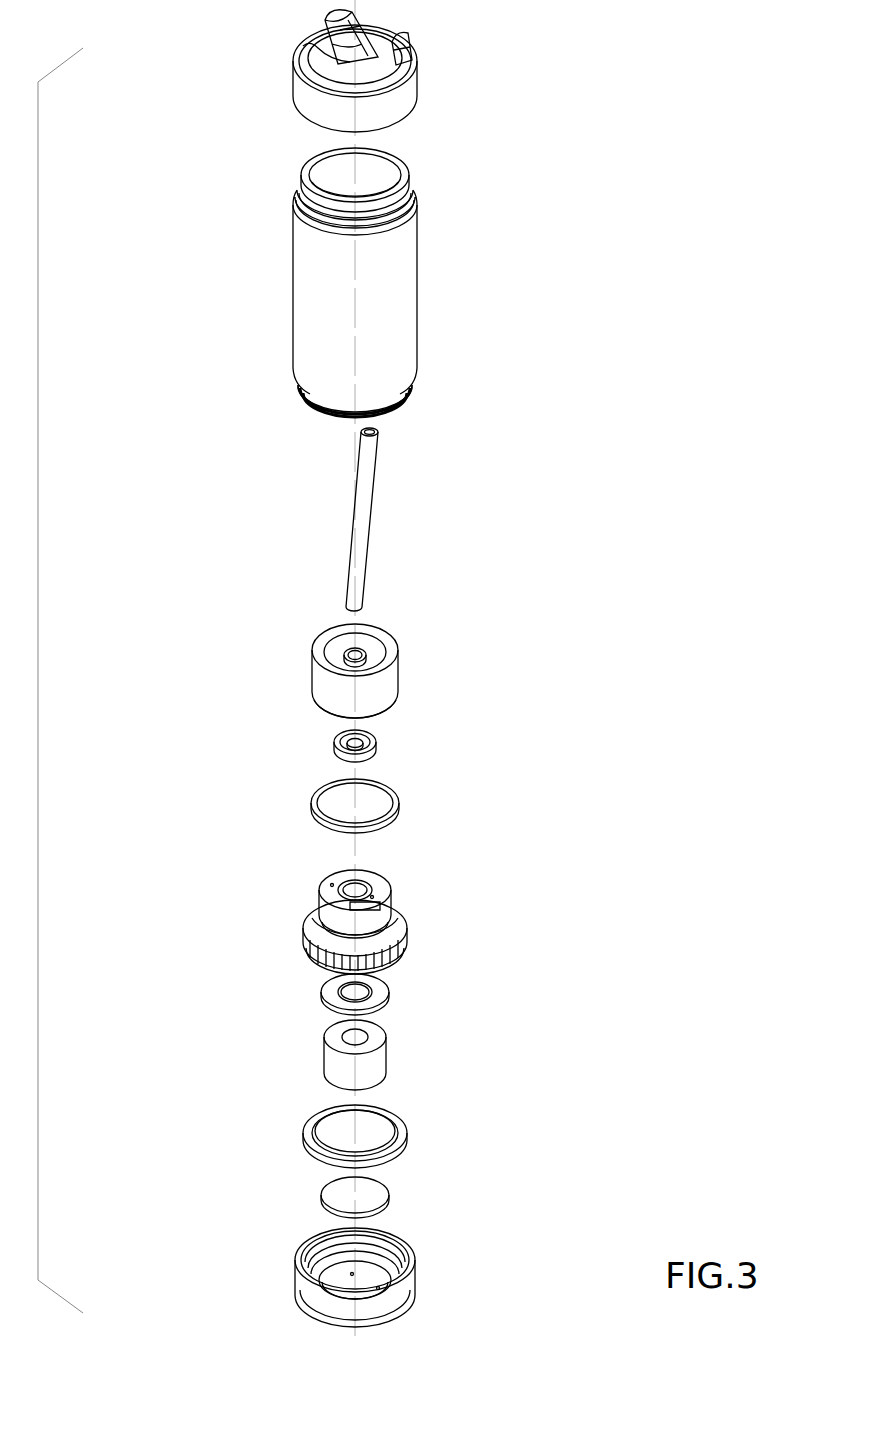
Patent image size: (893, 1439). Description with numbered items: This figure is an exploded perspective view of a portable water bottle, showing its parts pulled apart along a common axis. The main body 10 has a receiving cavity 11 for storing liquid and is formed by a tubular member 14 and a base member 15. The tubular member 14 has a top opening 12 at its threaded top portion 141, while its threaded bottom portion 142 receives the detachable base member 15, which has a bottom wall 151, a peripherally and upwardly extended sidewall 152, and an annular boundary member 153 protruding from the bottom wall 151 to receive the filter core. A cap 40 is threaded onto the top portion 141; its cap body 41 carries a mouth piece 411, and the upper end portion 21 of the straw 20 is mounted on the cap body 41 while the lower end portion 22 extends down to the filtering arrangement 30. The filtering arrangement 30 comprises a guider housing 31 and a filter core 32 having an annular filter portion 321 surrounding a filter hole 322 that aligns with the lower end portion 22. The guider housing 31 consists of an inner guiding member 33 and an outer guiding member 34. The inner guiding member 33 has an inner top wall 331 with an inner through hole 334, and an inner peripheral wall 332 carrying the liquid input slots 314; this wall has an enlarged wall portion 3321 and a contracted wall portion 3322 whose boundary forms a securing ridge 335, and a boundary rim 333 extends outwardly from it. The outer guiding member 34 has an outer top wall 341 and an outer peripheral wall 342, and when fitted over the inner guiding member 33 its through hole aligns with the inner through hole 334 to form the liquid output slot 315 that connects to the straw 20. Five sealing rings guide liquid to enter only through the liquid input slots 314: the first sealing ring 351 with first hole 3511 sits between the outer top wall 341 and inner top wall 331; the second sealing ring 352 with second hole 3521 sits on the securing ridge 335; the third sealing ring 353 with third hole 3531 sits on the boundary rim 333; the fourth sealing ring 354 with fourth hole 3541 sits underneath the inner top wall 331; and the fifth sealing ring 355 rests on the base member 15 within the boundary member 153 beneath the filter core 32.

The main body 10 is at (387, 261).
The receiving cavity 11 is at (363, 190).
The top opening 12 is at (339, 159).
The tubular member 14 is at (415, 337).
The top portion 141 is at (417, 198).
The bottom portion 142 is at (417, 381).
The base member 15 is at (380, 1289).
The bottom wall 151 is at (365, 1280).
The sidewall 152 is at (352, 1312).
The boundary member 153 is at (295, 1250).
The straw 20 is at (427, 519).
The upper end portion 21 is at (388, 448).
The lower end portion 22 is at (380, 565).
The filtering arrangement 30 is at (355, 637).
The guider housing 31 is at (389, 637).
The liquid output slot 315 is at (354, 648).
The filter core 32 is at (371, 1071).
The filter portion 321 is at (365, 1073).
The filter hole 322 is at (348, 1038).
The inner guiding member 33 is at (375, 885).
The inner top wall 331 is at (370, 877).
The inner peripheral wall 332 is at (390, 922).
The enlarged wall portion 3321 is at (320, 945).
The contracted wall portion 3322 is at (350, 880).
The boundary rim 333 is at (400, 950).
The inner through hole 334 is at (340, 932).
The securing ridge 335 is at (362, 927).
The liquid input slots 314 is at (408, 935).
The outer guiding member 34 is at (397, 665).
The outer top wall 341 is at (330, 652).
The outer peripheral wall 342 is at (380, 698).
The first sealing ring 351 is at (345, 721).
The first hole 3511 is at (345, 738).
The second sealing ring 352 is at (378, 777).
The second hole 3521 is at (347, 810).
The third sealing ring 353 is at (286, 1118).
The third hole 3531 is at (350, 1132).
The fourth sealing ring 354 is at (436, 1003).
The fourth hole 3541 is at (365, 990).
The fifth sealing ring 355 is at (333, 1194).
The cap 40 is at (342, 71).
The cap body 41 is at (395, 100).
The mouth piece 411 is at (337, 23).